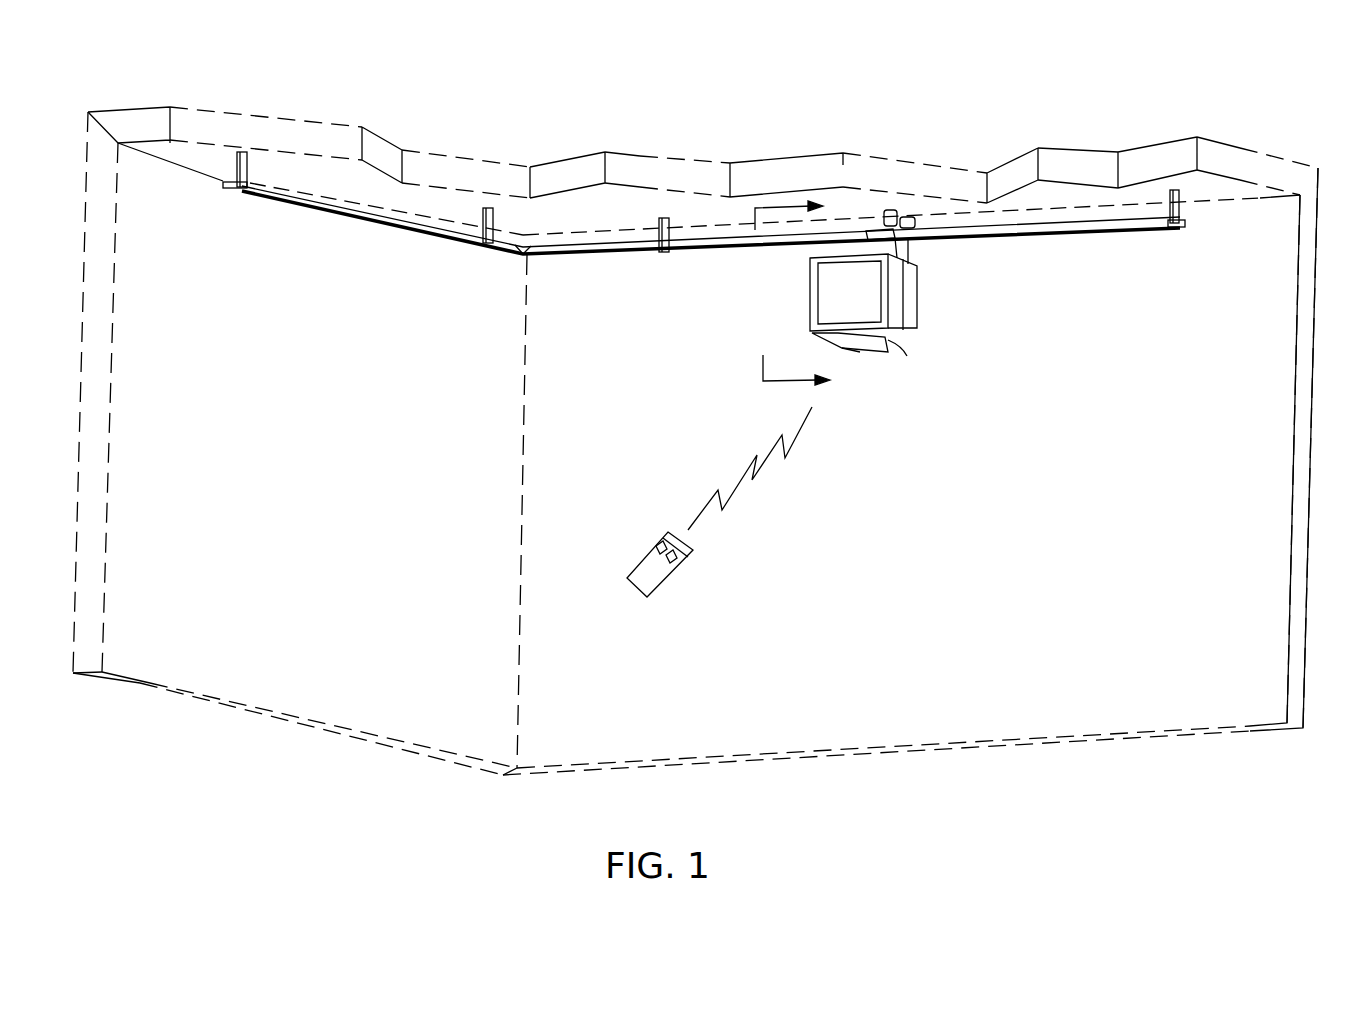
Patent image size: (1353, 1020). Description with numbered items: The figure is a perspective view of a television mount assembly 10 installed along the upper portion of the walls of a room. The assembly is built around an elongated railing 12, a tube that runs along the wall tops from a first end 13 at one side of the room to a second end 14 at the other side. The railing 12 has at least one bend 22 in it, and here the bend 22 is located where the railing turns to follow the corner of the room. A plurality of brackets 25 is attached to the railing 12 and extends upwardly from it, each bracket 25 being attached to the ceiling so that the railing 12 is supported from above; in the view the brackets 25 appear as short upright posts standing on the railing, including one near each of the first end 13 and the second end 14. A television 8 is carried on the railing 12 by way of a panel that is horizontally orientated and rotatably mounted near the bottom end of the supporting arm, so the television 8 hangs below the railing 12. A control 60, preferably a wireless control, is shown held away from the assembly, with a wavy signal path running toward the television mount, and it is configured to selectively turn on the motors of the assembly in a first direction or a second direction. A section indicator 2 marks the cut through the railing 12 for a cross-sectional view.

The television 8 is at (873, 297).
The television mount assembly 10 is at (440, 452).
The elongated railing 12 is at (560, 247).
The first end 13 is at (1195, 215).
The second end 14 is at (223, 183).
The bend 22 is at (527, 251).
The brackets 25 is at (247, 155).
The control 60 is at (653, 593).
The section line 2- 2 is at (811, 285).